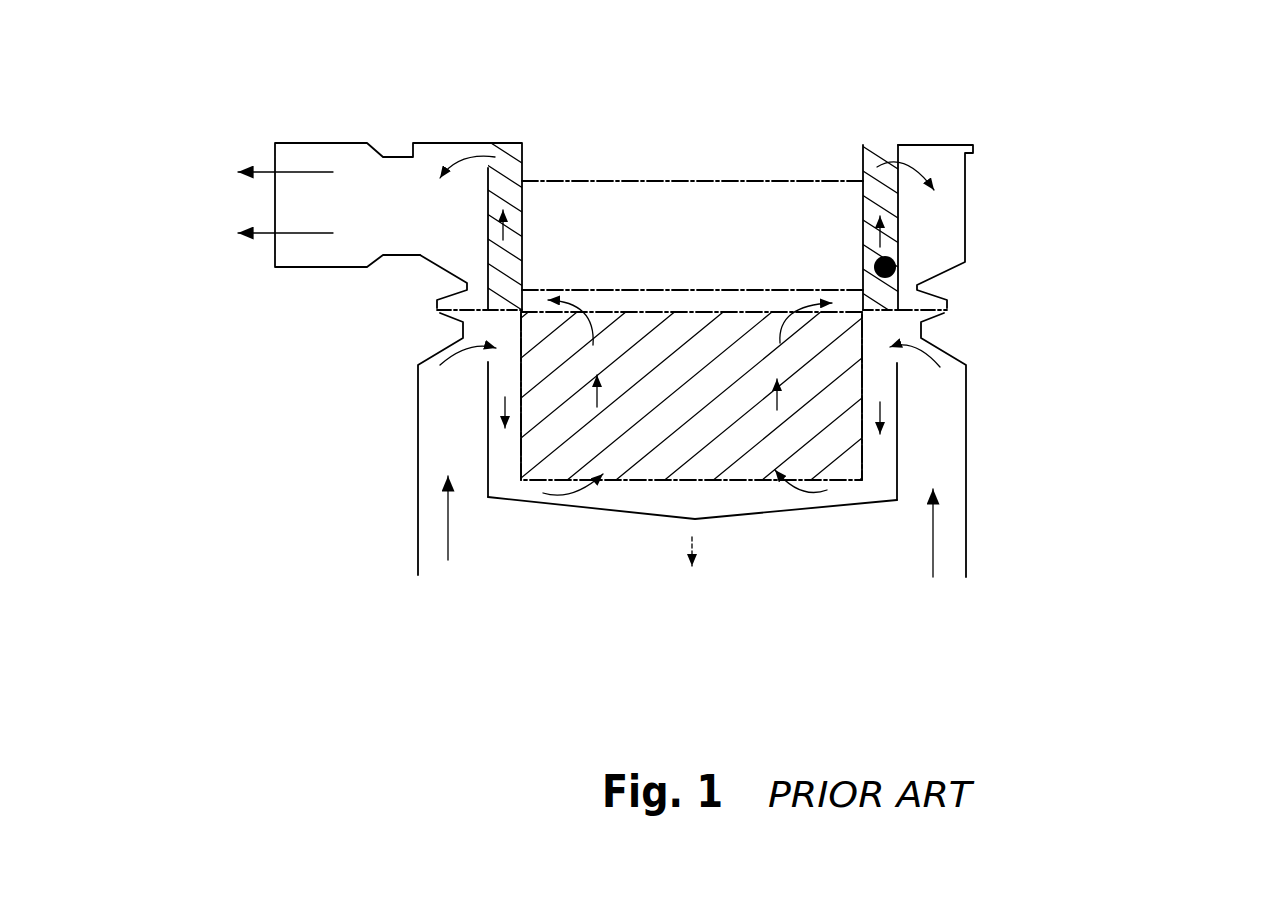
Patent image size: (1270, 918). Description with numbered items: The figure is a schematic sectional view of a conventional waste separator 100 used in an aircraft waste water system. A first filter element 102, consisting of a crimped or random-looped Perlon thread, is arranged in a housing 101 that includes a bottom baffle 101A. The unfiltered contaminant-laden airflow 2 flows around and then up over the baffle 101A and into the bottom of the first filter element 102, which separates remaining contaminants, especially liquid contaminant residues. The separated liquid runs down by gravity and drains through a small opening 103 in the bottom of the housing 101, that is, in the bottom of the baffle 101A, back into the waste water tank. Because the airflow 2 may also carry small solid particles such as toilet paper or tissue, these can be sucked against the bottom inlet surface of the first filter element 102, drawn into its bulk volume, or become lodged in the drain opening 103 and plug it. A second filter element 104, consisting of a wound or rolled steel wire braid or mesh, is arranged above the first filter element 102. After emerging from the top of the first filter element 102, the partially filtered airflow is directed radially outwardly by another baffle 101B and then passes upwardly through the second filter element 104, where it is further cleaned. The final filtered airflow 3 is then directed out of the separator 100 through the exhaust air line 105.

The waste separator 100 is at (1030, 218).
The housing 101 is at (967, 458).
The bottom baffle 101A is at (797, 508).
The baffle 101B is at (707, 290).
The first filter element 102 is at (683, 355).
The small opening 103 is at (693, 525).
The second filter element 104 is at (885, 267).
The exhaust air line 105 is at (340, 165).
The unfiltered contaminant-laden airflow 2 is at (690, 505).
The filtered airflow 3 is at (250, 206).